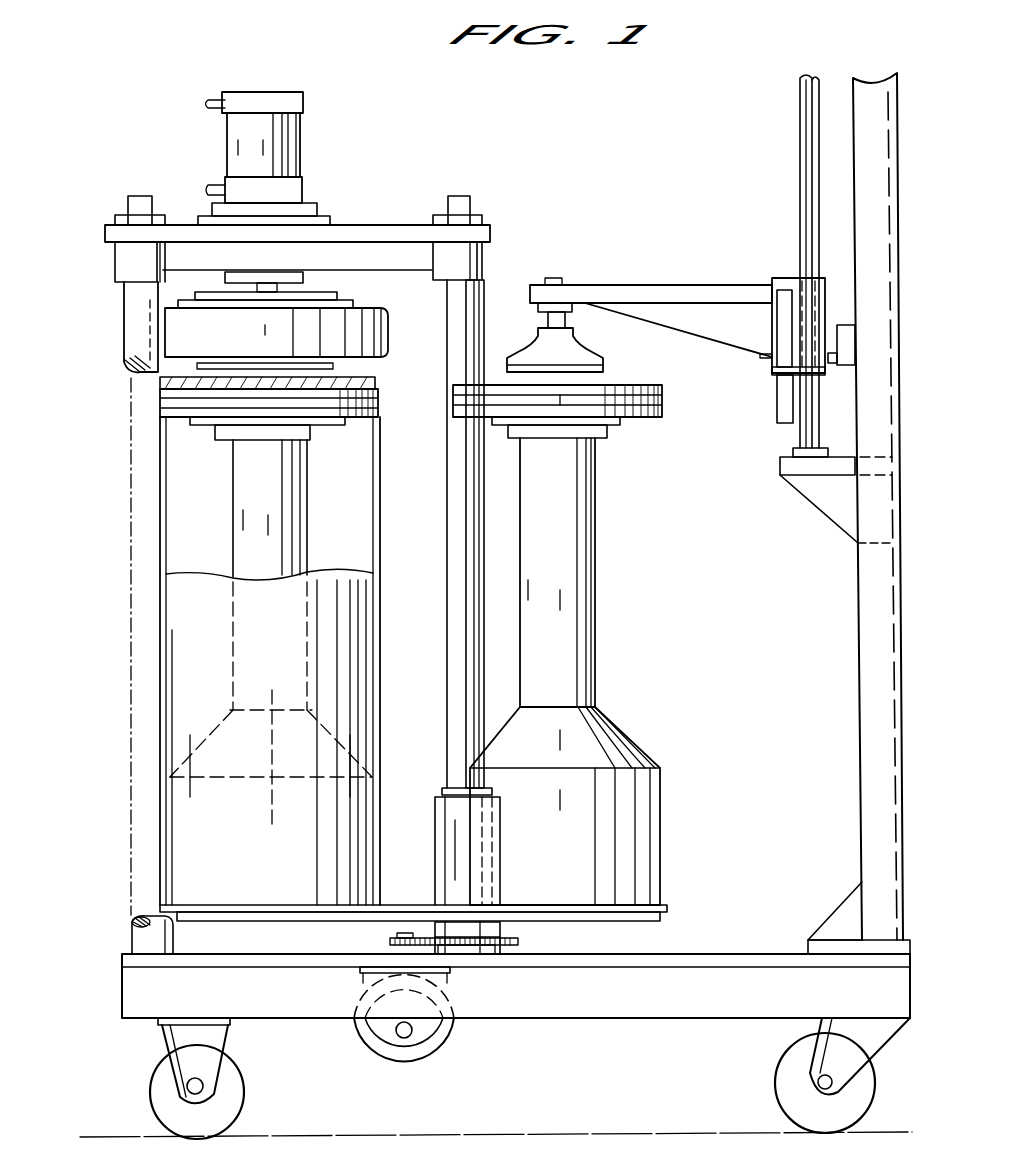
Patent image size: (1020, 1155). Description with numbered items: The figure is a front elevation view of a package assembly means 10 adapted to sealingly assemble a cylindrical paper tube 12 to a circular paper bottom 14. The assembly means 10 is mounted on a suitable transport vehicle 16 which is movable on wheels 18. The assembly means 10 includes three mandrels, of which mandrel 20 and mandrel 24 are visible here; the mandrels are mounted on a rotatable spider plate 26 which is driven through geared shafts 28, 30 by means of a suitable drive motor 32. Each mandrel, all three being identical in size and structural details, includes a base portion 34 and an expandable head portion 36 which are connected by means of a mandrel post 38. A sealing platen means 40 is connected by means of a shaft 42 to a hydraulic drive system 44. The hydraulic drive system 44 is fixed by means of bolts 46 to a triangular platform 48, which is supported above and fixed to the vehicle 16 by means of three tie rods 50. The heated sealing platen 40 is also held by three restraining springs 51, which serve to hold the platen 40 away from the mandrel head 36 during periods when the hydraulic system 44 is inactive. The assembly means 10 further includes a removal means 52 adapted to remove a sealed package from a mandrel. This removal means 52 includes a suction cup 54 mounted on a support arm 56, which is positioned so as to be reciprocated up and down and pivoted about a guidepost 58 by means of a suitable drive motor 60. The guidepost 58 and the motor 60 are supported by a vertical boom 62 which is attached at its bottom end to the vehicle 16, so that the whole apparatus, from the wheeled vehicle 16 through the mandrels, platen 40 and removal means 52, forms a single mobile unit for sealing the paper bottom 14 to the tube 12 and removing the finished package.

The package assembly means 10 is at (634, 262).
The cylindrical paper tube 12 is at (382, 442).
The circular paper bottom 14 is at (333, 386).
The transport vehicle 16 is at (623, 1003).
The wheels 18 is at (160, 1090).
The mandrel 20 is at (233, 508).
The mandrel 24 is at (598, 641).
The rotatable spider plate 26 is at (653, 913).
The geared shaft 28 is at (388, 940).
The geared shaft 30 is at (505, 933).
The drive motor 32 is at (385, 1050).
The base portion 34 is at (643, 790).
The expandable head portion 36 is at (662, 400).
The mandrel post 38 is at (580, 556).
The sealing platen means 40 is at (393, 318).
The shaft 42 is at (235, 288).
The hydraulic drive system 44 is at (283, 137).
The bolts 46 is at (215, 210).
The triangular platform 48 is at (408, 230).
The tie rods 50 is at (460, 300).
The restraining springs 51 is at (356, 305).
The removal means 52 is at (718, 347).
The suction cup 54 is at (583, 356).
The support arm 56 is at (748, 262).
The guidepost 58 is at (803, 108).
The drive motor 60 is at (847, 363).
The vertical boom 62 is at (870, 663).